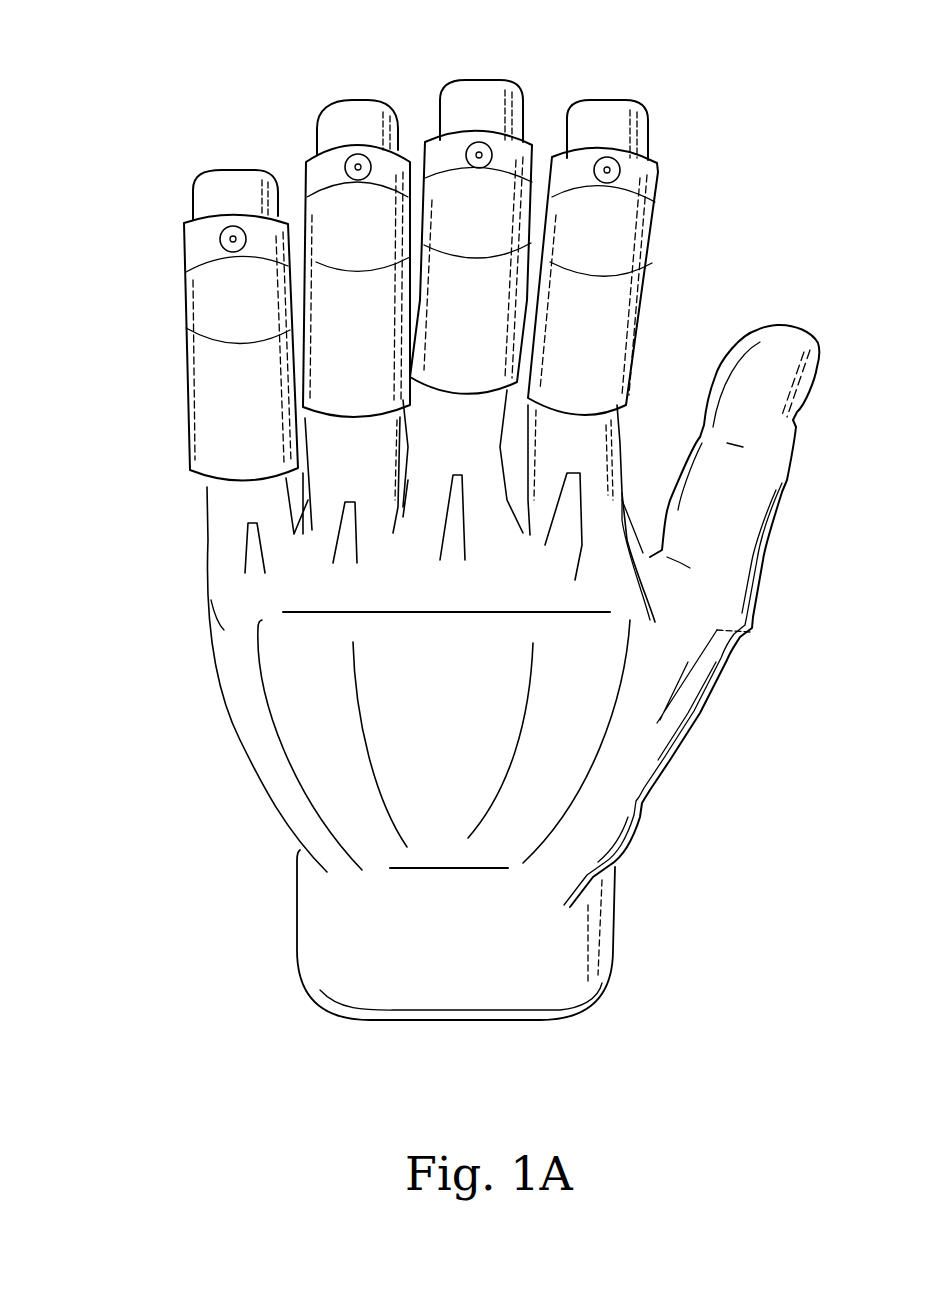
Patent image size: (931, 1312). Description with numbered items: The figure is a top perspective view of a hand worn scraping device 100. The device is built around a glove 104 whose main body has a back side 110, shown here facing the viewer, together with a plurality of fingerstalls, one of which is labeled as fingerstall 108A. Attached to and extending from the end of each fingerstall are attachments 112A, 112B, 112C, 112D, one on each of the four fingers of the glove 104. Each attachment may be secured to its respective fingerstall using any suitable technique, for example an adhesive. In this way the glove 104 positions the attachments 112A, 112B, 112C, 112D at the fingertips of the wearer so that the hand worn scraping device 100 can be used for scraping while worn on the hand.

The hand worn scraping device 100 is at (190, 577).
The glove 104 is at (708, 781).
The fingerstall 108A is at (622, 440).
The back side 110 is at (412, 748).
The attachment 112A is at (595, 73).
The attachment 112B is at (457, 65).
The attachment 112C is at (310, 98).
The attachment 112D is at (190, 170).